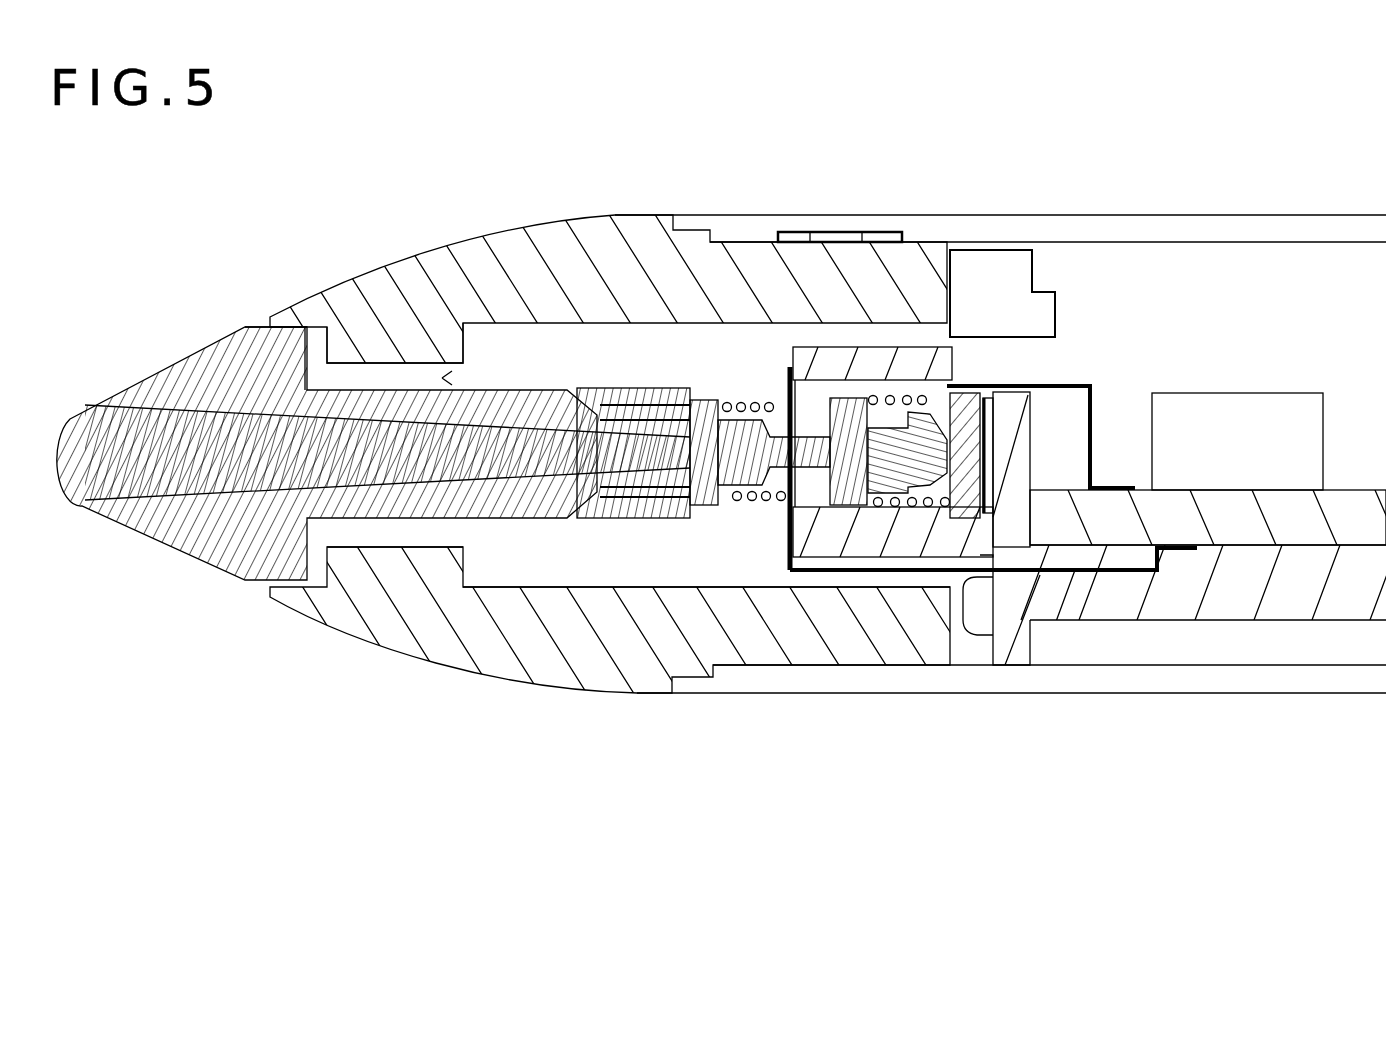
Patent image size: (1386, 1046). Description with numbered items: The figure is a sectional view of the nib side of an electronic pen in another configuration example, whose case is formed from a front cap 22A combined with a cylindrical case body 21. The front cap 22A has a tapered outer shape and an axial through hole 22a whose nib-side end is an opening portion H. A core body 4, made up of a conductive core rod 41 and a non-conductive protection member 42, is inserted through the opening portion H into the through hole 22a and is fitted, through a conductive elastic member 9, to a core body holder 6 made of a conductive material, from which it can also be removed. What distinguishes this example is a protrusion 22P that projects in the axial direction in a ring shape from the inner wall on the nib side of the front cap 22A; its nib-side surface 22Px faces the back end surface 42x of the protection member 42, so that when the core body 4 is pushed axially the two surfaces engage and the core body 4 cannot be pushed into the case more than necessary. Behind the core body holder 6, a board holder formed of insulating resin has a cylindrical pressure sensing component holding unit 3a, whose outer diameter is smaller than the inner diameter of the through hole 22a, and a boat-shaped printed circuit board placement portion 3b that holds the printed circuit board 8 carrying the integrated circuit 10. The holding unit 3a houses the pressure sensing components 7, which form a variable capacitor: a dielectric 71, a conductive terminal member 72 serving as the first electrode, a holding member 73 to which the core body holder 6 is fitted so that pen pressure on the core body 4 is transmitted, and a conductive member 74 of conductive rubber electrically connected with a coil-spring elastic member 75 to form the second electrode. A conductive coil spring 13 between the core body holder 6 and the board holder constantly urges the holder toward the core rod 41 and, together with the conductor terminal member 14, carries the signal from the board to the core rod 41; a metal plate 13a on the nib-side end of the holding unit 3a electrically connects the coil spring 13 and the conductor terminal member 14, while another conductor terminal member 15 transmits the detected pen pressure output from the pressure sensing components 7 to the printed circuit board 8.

The core body 4 is at (354, 356).
The core rod 41 is at (70, 420).
The protection member 42 is at (135, 395).
The back end surface 42x is at (288, 340).
The protrusion 22P is at (362, 573).
The surface on the nib side of the protrusion 22Px is at (340, 330).
The front cap 22A is at (487, 642).
The through hole 22a is at (578, 558).
The case body 21 is at (1025, 230).
The opening portion H is at (442, 378).
The conductive elastic member 9 is at (610, 410).
The core body holder 6 is at (705, 505).
The coil spring 13 is at (762, 503).
The metal plate 13a is at (788, 367).
The pressure sensing component holding unit 3a is at (1013, 430).
The conductor terminal member 15 is at (1092, 452).
The conductor terminal member 14 is at (1130, 585).
The integrated circuit 10 is at (1226, 413).
The printed circuit board 8 is at (1352, 500).
The printed circuit board placement portion 3b is at (1262, 592).
The pressure sensing components 7 is at (917, 628).
The holding member 73 is at (833, 507).
The elastic member 75 is at (888, 495).
The conductive member 74 is at (933, 507).
The dielectric 71 is at (960, 520).
The terminal member 72 is at (993, 517).